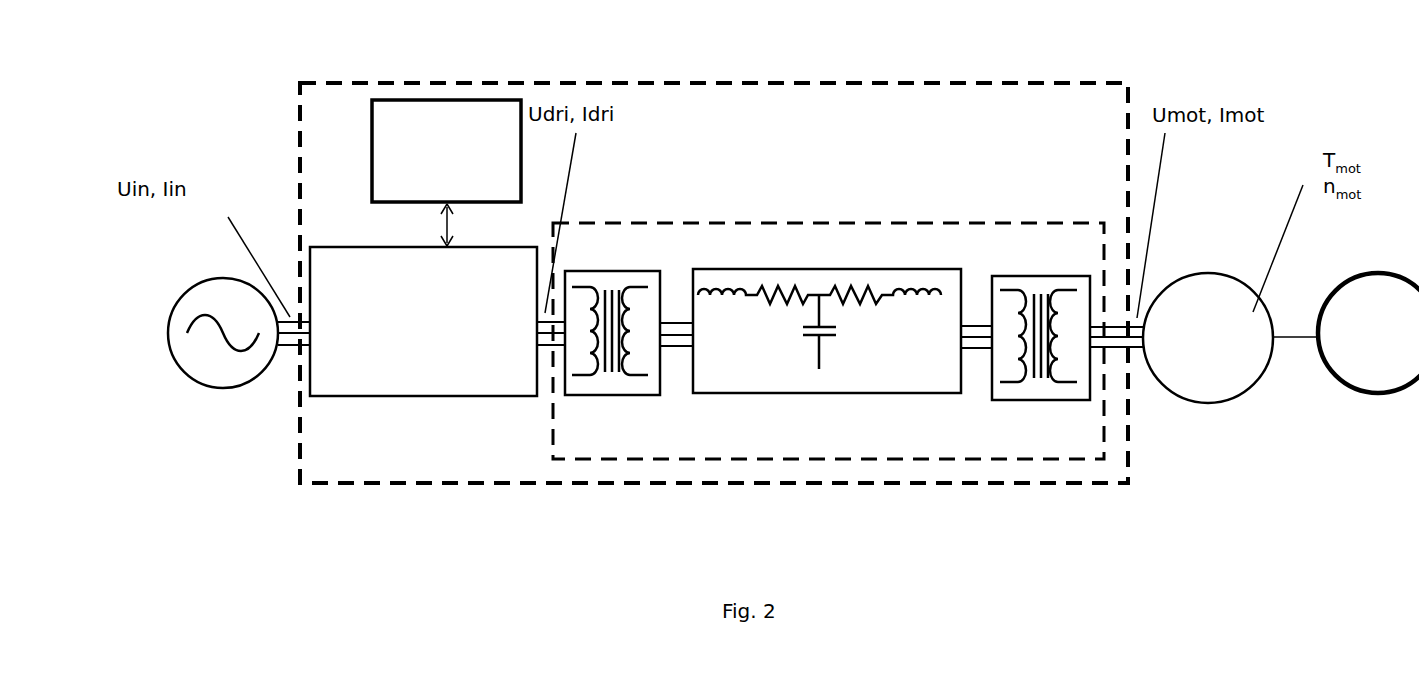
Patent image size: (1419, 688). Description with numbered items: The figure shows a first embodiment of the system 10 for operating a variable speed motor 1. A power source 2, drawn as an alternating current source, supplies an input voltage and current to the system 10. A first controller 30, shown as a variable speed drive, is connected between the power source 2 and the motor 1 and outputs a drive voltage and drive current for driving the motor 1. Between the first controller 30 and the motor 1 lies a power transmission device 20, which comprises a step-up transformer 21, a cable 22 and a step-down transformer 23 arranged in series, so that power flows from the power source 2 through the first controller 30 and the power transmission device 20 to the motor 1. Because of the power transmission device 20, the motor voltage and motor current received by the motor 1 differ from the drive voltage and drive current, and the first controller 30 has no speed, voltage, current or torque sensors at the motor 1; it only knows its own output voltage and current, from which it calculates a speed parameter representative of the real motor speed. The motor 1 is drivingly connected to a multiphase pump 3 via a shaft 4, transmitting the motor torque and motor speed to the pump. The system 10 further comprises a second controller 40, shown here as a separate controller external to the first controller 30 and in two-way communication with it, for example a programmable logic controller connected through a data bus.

The variable speed motor 1 is at (1233, 293).
The power source 2 is at (193, 298).
The multiphase pump 3 is at (1378, 295).
The shaft 4 is at (1297, 328).
The system 10 is at (258, 108).
The power transmission device 20 is at (1078, 223).
The step-up transformer 21 is at (632, 388).
The cable 22 is at (885, 383).
The step-down transformer 23 is at (1030, 391).
The first controller 30 is at (342, 267).
The second controller 40 is at (462, 117).